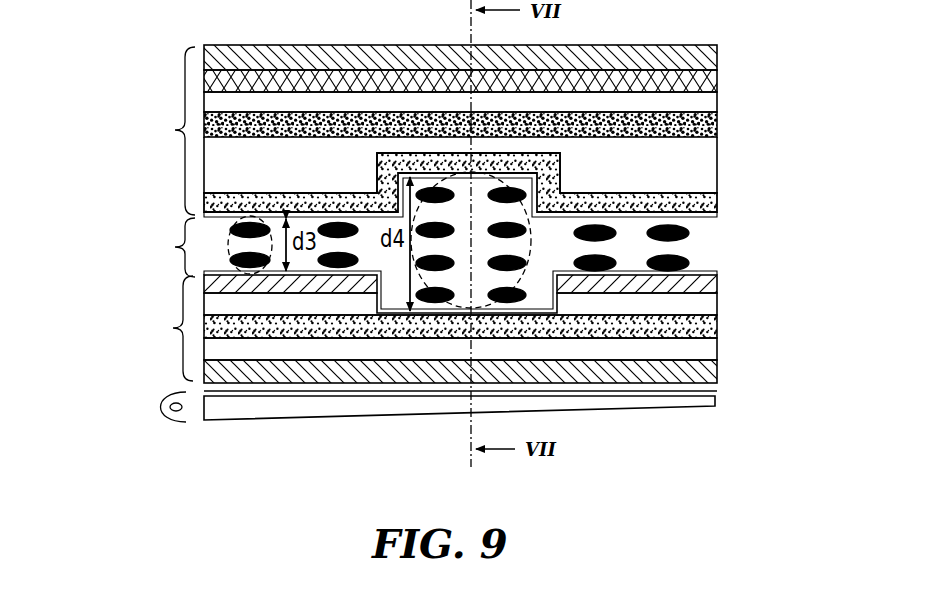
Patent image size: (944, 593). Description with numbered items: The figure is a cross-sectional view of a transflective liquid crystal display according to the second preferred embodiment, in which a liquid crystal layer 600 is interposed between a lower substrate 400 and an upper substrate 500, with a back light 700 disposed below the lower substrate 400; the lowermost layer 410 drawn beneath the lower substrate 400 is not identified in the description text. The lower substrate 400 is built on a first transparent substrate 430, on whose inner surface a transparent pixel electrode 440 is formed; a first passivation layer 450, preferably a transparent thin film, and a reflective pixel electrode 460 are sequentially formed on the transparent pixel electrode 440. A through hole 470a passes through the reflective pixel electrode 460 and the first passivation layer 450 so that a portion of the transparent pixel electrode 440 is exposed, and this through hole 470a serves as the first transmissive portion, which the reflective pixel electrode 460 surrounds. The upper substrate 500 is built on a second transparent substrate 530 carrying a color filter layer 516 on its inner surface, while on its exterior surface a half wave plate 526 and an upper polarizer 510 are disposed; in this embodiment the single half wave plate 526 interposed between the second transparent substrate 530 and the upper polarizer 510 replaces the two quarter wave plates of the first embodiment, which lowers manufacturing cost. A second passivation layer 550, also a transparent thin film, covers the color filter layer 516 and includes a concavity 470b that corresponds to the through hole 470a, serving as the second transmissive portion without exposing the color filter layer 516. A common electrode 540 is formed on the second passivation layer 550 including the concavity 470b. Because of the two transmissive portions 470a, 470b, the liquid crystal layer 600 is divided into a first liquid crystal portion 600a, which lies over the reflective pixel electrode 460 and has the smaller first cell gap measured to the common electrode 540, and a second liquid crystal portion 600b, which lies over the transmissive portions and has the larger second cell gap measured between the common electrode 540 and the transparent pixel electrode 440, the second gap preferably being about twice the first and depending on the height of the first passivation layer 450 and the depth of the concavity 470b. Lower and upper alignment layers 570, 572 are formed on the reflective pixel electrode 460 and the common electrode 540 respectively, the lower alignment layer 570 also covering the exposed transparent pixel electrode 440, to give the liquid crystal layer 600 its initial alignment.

The upper substrate 500 is at (161, 131).
The upper polarizer 510 is at (717, 53).
The half wave plate 526 is at (717, 80).
The second transparent substrate 530 is at (717, 107).
The color filter layer 516 is at (717, 132).
The second passivation layer 550 is at (712, 175).
The common electrode 540 is at (717, 205).
The upper alignment layer 572 is at (202, 215).
The liquid crystal layer 600 is at (243, 247).
The first liquid crystal portion 600a is at (240, 268).
The second liquid crystal portion 600b is at (437, 300).
The through hole 470a is at (535, 298).
The concavity 470b is at (522, 183).
The lower substrate 400 is at (160, 328).
The lower alignment layer 570 is at (202, 273).
The reflective pixel electrode 460 is at (717, 288).
The first passivation layer 450 is at (717, 305).
The transparent pixel electrode 440 is at (717, 330).
The first transparent substrate 430 is at (717, 352).
The lower substrate 410 is at (717, 378).
The back light 700 is at (673, 406).